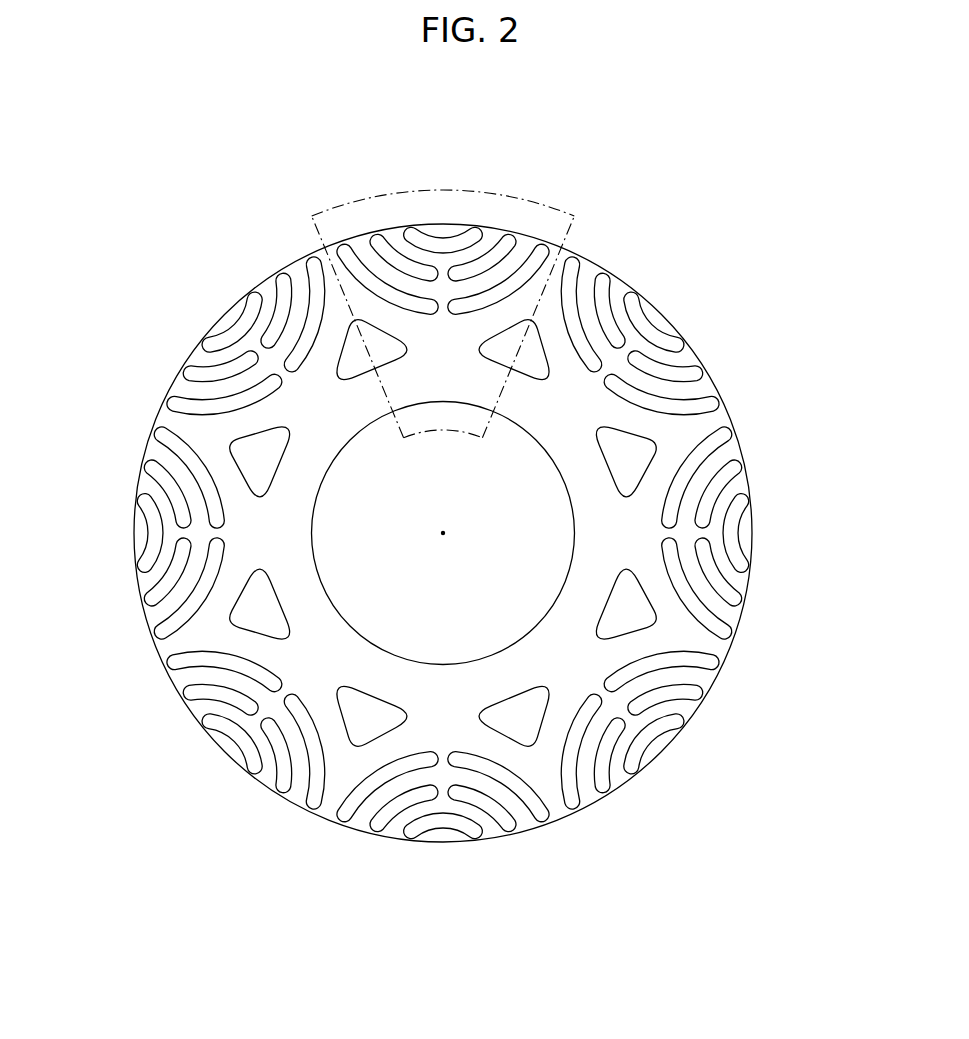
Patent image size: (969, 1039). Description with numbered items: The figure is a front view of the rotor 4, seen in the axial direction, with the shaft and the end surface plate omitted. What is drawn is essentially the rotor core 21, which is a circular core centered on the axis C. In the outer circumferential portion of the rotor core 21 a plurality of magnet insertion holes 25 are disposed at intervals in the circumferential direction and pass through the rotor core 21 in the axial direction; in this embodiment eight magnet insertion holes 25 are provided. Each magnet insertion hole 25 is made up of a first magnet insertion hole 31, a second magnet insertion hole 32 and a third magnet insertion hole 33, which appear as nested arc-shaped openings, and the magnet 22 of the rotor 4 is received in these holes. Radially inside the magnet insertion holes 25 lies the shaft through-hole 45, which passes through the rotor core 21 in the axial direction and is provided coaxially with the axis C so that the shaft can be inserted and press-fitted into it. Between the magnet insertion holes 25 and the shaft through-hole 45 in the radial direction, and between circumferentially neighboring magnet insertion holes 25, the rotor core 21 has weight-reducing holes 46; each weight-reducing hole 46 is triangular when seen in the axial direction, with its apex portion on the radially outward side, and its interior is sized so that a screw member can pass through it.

The rotor 4 is at (147, 427).
The rotor core 21 is at (232, 318).
The magnet 22 is at (402, 219).
The magnet insertion hole 25 is at (402, 195).
The first magnet insertion hole 31 is at (403, 227).
The second magnet insertion hole 32 is at (373, 237).
The third magnet insertion hole 33 is at (408, 127).
The shaft through-hole 45 is at (520, 440).
The weight-reducing hole 46 is at (653, 448).
The axis C is at (447, 533).